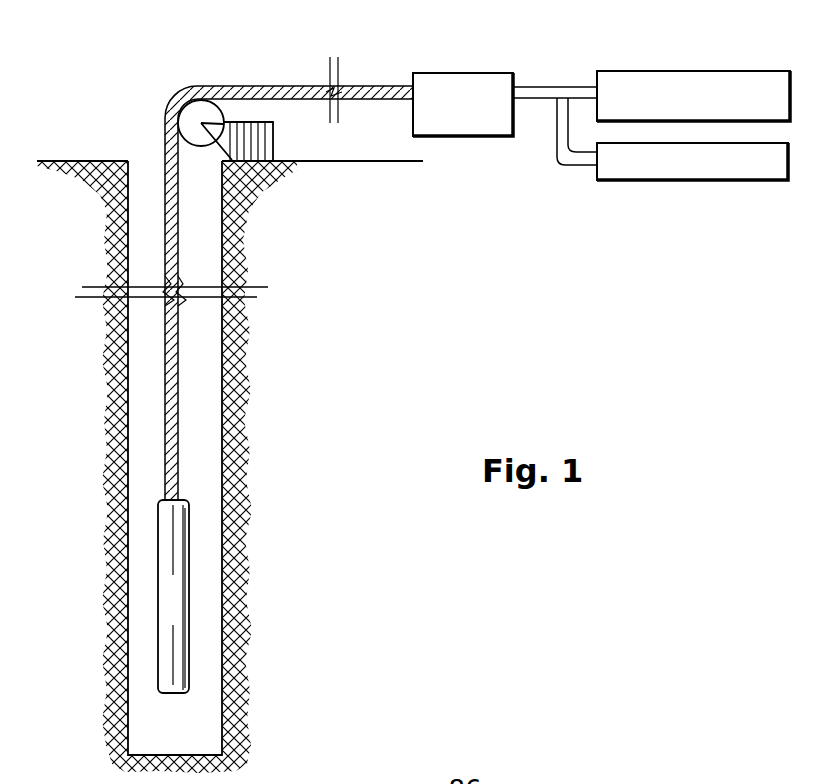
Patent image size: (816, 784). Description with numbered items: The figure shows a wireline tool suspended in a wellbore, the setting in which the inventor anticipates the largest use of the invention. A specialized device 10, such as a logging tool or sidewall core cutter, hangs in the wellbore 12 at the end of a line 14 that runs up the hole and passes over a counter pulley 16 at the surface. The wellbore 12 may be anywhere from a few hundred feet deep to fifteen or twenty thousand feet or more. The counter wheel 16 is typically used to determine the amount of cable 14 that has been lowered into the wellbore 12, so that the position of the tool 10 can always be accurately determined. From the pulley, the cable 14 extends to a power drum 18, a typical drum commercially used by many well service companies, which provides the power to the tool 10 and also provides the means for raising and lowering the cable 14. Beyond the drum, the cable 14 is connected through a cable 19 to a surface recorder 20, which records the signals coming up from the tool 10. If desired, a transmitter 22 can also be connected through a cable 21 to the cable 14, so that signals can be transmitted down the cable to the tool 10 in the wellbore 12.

The specialized device 10 is at (178, 555).
The wellbore 12 is at (200, 269).
The line 14 is at (177, 222).
The counter pulley 16 is at (200, 107).
The power drum 18 is at (500, 73).
The cable 19 is at (543, 83).
The surface recorder 20 is at (675, 70).
The cable 21 is at (577, 165).
The transmitter 22 is at (708, 180).